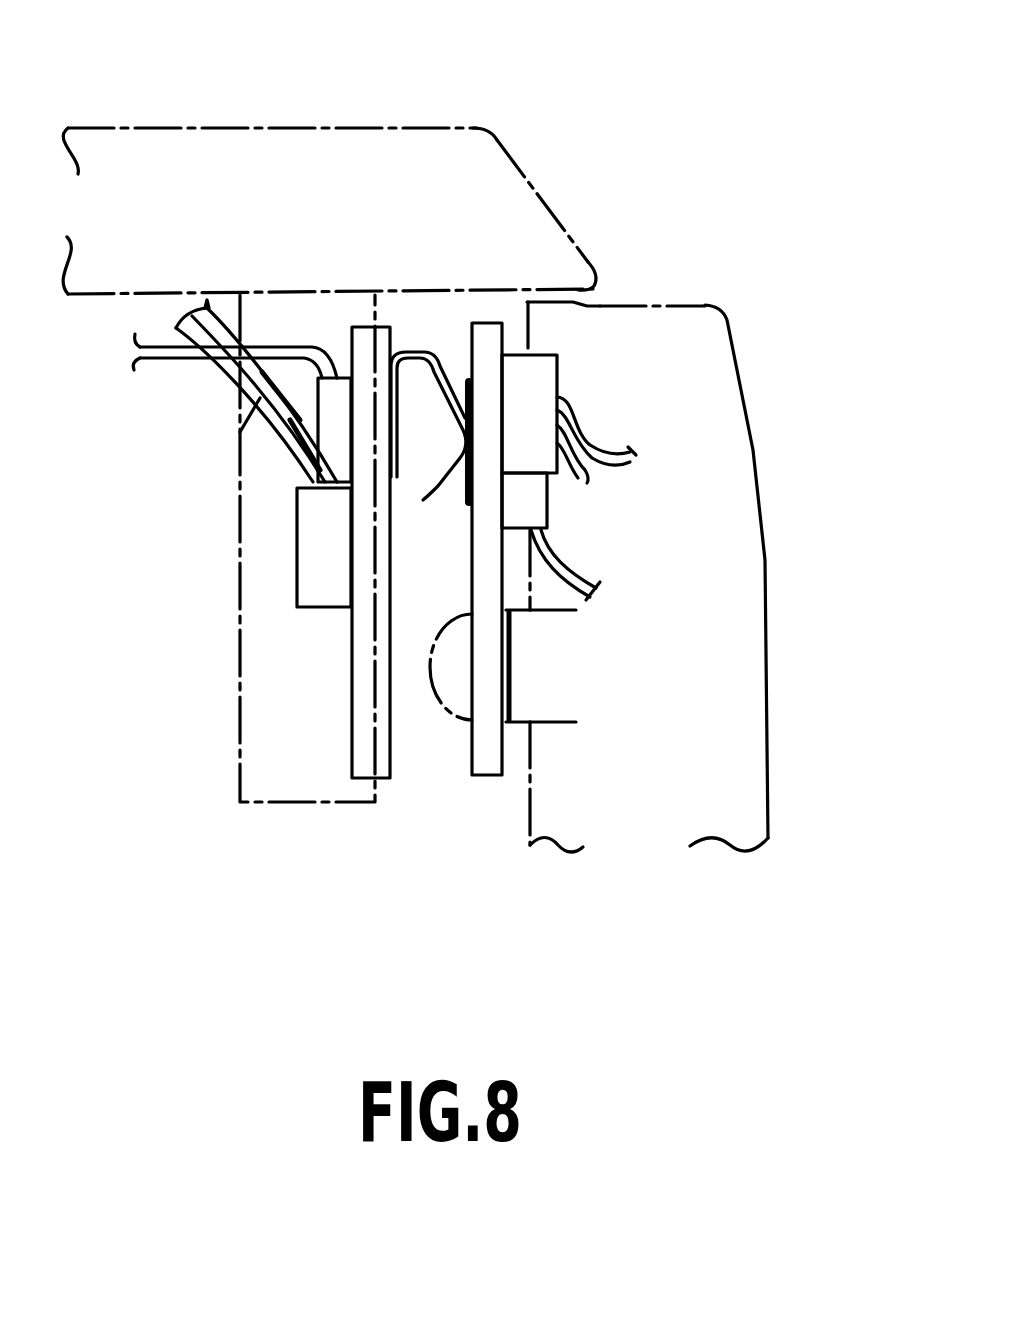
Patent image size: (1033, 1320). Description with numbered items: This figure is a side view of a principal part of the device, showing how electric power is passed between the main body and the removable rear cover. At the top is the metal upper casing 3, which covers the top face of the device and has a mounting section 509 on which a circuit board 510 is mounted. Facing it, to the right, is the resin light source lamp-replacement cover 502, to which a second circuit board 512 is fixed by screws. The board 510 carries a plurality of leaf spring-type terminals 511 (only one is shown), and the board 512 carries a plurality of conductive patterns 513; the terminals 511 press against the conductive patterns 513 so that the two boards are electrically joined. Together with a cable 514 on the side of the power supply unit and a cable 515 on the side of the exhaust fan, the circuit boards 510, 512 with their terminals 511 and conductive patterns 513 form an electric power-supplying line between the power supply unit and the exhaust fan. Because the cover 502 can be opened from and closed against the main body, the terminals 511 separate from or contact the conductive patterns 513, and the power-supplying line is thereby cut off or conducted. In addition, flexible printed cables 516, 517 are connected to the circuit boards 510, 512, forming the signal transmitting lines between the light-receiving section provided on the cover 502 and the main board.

The upper casing 3 is at (447, 123).
The light source lamp-replacement cover 502 is at (735, 346).
The mounting section 509 is at (238, 606).
The circuit board 510 is at (353, 746).
The leaf spring-type terminal 511 is at (422, 353).
The circuit board 512 is at (494, 763).
The conductive pattern 513 is at (464, 382).
The cable 514 is at (260, 398).
The cable 515 is at (602, 432).
The flexible printed cable 516 is at (170, 353).
The flexible printed cable 517 is at (578, 565).